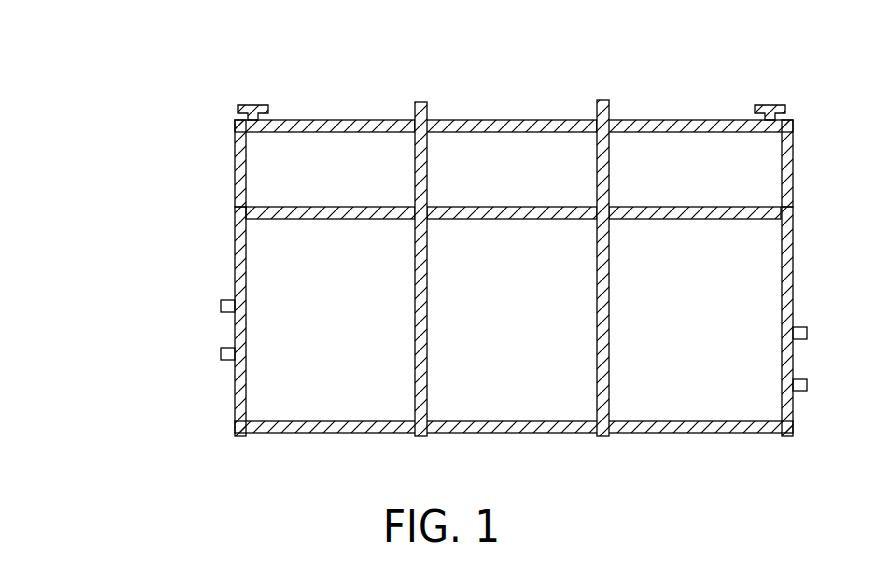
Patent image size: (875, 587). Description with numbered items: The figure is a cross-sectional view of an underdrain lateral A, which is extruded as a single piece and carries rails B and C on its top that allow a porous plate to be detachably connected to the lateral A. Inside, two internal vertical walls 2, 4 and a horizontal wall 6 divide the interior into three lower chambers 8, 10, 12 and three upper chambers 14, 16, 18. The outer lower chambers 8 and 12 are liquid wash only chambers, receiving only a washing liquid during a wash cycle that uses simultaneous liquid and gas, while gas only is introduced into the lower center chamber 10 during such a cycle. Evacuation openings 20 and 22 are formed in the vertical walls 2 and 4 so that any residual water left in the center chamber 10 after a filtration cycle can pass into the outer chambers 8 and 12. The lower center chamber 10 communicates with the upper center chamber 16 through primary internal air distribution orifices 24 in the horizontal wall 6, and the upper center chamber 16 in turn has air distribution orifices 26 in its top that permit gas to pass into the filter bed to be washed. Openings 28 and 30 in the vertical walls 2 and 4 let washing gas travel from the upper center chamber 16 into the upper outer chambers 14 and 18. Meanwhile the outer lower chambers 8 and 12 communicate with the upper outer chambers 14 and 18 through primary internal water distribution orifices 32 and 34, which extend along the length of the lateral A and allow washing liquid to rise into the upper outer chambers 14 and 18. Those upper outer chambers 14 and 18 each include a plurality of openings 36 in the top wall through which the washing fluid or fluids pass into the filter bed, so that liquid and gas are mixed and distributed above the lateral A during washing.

The internal vertical wall 2 is at (415, 340).
The internal vertical wall 4 is at (610, 340).
The horizontal wall 6 is at (271, 218).
The outer lower chamber 8 is at (265, 393).
The lower center chamber 10 is at (540, 402).
The outer lower chamber 12 is at (760, 290).
The upper outer chamber 14 is at (262, 163).
The upper center chamber 16 is at (461, 143).
The upper outer chamber 18 is at (760, 165).
The evacuation opening 20 is at (415, 404).
The evacuation opening 22 is at (610, 405).
The primary internal air distribution orifice 24 is at (508, 219).
The air distribution orifice 26 is at (511, 120).
The opening 28 is at (415, 162).
The opening 30 is at (610, 162).
The primary internal water distribution orifice 32 is at (323, 219).
The primary internal water distribution orifice 34 is at (690, 219).
The openings 36 is at (373, 110).
The underdrain lateral A is at (289, 80).
The rail B is at (243, 104).
The rail C is at (781, 104).